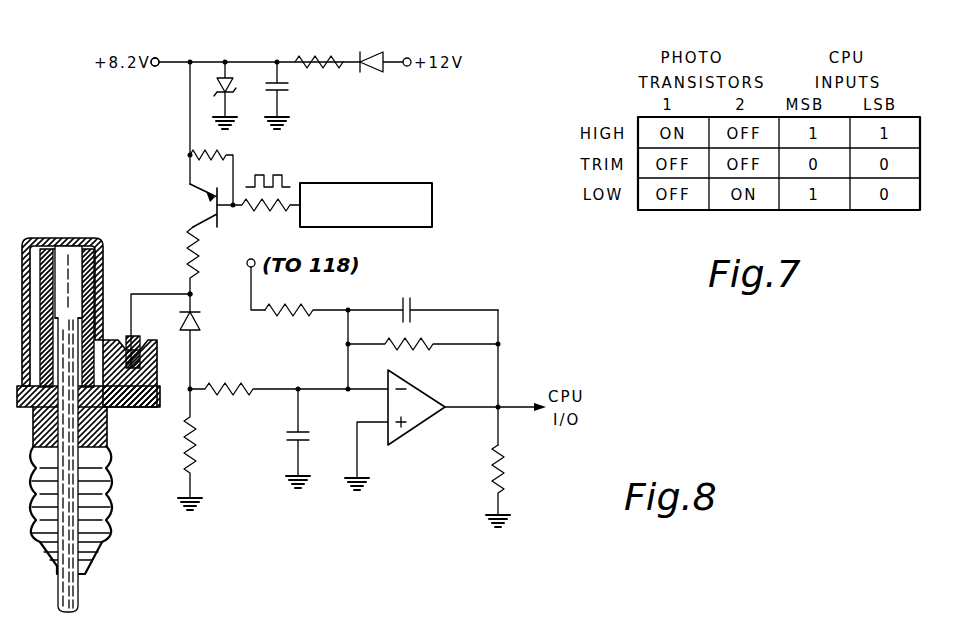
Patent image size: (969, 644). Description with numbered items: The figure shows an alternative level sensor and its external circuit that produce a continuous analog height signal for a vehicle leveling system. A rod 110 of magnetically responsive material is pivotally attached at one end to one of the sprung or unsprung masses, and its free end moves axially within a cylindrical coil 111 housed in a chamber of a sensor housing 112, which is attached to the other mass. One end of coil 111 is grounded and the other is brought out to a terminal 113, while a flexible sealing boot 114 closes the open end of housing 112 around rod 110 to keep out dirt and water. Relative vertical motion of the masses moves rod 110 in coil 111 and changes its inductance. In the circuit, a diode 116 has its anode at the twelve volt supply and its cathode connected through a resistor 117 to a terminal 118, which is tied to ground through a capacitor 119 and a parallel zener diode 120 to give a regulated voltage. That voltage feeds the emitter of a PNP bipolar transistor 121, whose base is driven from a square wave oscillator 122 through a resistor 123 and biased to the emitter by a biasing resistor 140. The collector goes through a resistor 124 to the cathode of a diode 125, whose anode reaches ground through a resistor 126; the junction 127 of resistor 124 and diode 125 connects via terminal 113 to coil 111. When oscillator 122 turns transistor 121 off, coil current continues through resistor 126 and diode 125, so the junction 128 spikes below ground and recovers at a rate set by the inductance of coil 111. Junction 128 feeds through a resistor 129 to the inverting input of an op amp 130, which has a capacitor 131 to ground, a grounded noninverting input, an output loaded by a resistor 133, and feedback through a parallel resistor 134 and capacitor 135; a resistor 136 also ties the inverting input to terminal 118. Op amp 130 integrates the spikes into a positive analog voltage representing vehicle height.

The rod 110 is at (70, 583).
The coil 111 is at (92, 290).
The sensor housing 112 is at (75, 236).
The terminal 113 is at (124, 332).
The flexible sealing boot 114 is at (103, 506).
The diode 116 is at (372, 73).
The resistor 117 is at (302, 56).
The terminal 118 is at (158, 58).
The capacitor 119 is at (288, 90).
The zener diode 120 is at (230, 82).
The PNP bipolar transistor 121 is at (210, 198).
The square wave oscillator 122 is at (400, 183).
The resistor 123 is at (272, 210).
The resistor 124 is at (207, 249).
The diode 125 is at (200, 316).
The resistor 126 is at (196, 445).
The junction 127 is at (192, 293).
The junction 128 is at (194, 385).
The resistor 129 is at (226, 394).
The op amp 130 is at (432, 422).
The capacitor 131 is at (306, 442).
The resistor 133 is at (503, 488).
The resistor 134 is at (420, 348).
The capacitor 135 is at (412, 300).
The resistor 136 is at (286, 316).
The biasing resistor 140 is at (222, 150).